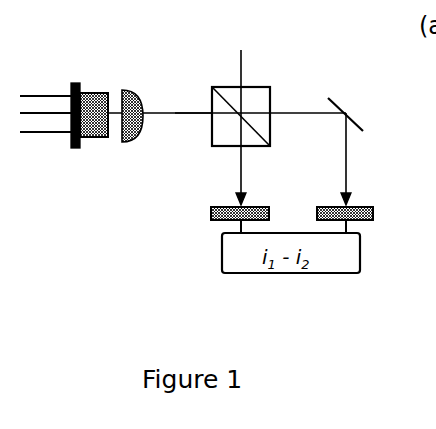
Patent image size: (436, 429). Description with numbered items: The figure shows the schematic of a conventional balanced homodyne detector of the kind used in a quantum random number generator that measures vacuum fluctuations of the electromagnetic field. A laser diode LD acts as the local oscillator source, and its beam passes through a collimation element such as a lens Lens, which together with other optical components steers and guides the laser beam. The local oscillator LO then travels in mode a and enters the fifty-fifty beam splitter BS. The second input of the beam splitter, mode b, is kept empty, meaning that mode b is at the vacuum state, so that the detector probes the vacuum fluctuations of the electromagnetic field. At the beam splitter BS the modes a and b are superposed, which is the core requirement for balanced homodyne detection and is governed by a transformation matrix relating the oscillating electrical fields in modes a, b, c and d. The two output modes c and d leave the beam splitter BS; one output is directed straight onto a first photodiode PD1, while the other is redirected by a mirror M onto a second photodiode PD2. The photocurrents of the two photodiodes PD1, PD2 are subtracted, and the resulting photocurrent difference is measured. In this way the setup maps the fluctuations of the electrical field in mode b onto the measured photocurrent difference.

The laser diode LD is at (64, 95).
The collimation element Lens is at (130, 92).
The local oscillator LO is at (160, 130).
The mode a is at (193, 97).
The mode b is at (241, 50).
The beam splitter BS is at (259, 102).
The mode c is at (251, 175).
The mode d is at (308, 130).
The mirror M is at (350, 108).
The photodiode PD1 is at (208, 219).
The photodiode PD2 is at (373, 219).